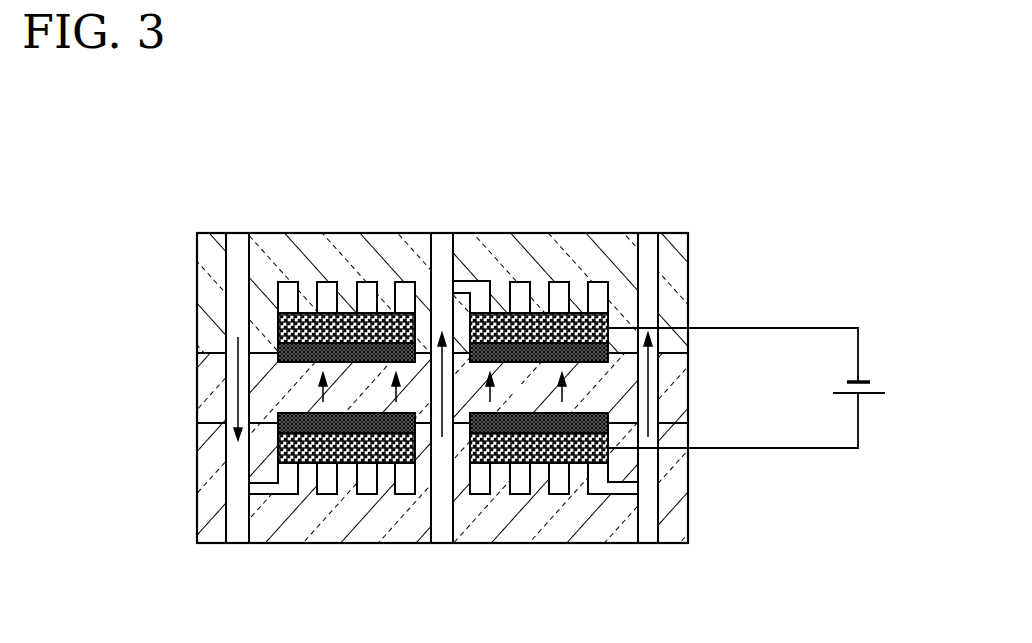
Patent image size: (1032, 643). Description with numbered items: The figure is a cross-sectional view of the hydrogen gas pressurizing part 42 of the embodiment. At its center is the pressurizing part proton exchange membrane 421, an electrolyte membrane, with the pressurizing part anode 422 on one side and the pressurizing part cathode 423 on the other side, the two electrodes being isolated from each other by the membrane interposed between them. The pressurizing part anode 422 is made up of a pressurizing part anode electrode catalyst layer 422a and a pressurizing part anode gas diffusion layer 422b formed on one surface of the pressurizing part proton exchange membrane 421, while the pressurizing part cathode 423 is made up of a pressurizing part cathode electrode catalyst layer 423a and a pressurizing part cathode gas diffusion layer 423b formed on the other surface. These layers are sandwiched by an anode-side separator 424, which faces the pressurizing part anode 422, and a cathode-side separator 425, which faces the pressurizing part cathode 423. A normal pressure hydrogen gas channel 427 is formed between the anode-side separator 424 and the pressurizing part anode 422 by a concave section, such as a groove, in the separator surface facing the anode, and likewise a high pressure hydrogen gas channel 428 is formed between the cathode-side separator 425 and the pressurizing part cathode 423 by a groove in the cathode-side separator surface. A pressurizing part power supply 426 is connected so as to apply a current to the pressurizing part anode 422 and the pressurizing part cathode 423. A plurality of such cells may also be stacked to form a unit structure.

The hydrogen gas pressurizing part 42 is at (483, 359).
The pressurizing part proton exchange membrane 421 is at (667, 390).
The pressurizing part anode 422 is at (227, 445).
The pressurizing part anode electrode catalyst layer 422a is at (297, 417).
The pressurizing part anode gas diffusion layer 422b is at (297, 450).
The pressurizing part cathode 423 is at (227, 334).
The pressurizing part cathode electrode catalyst layer 423a is at (297, 360).
The pressurizing part cathode gas diffusion layer 423b is at (277, 330).
The anode-side separator 424 is at (673, 493).
The cathode-side separator 425 is at (668, 279).
The pressurizing part power supply 426 is at (867, 380).
The normal pressure hydrogen gas channel 427 is at (483, 479).
The high pressure hydrogen gas channel 428 is at (520, 299).